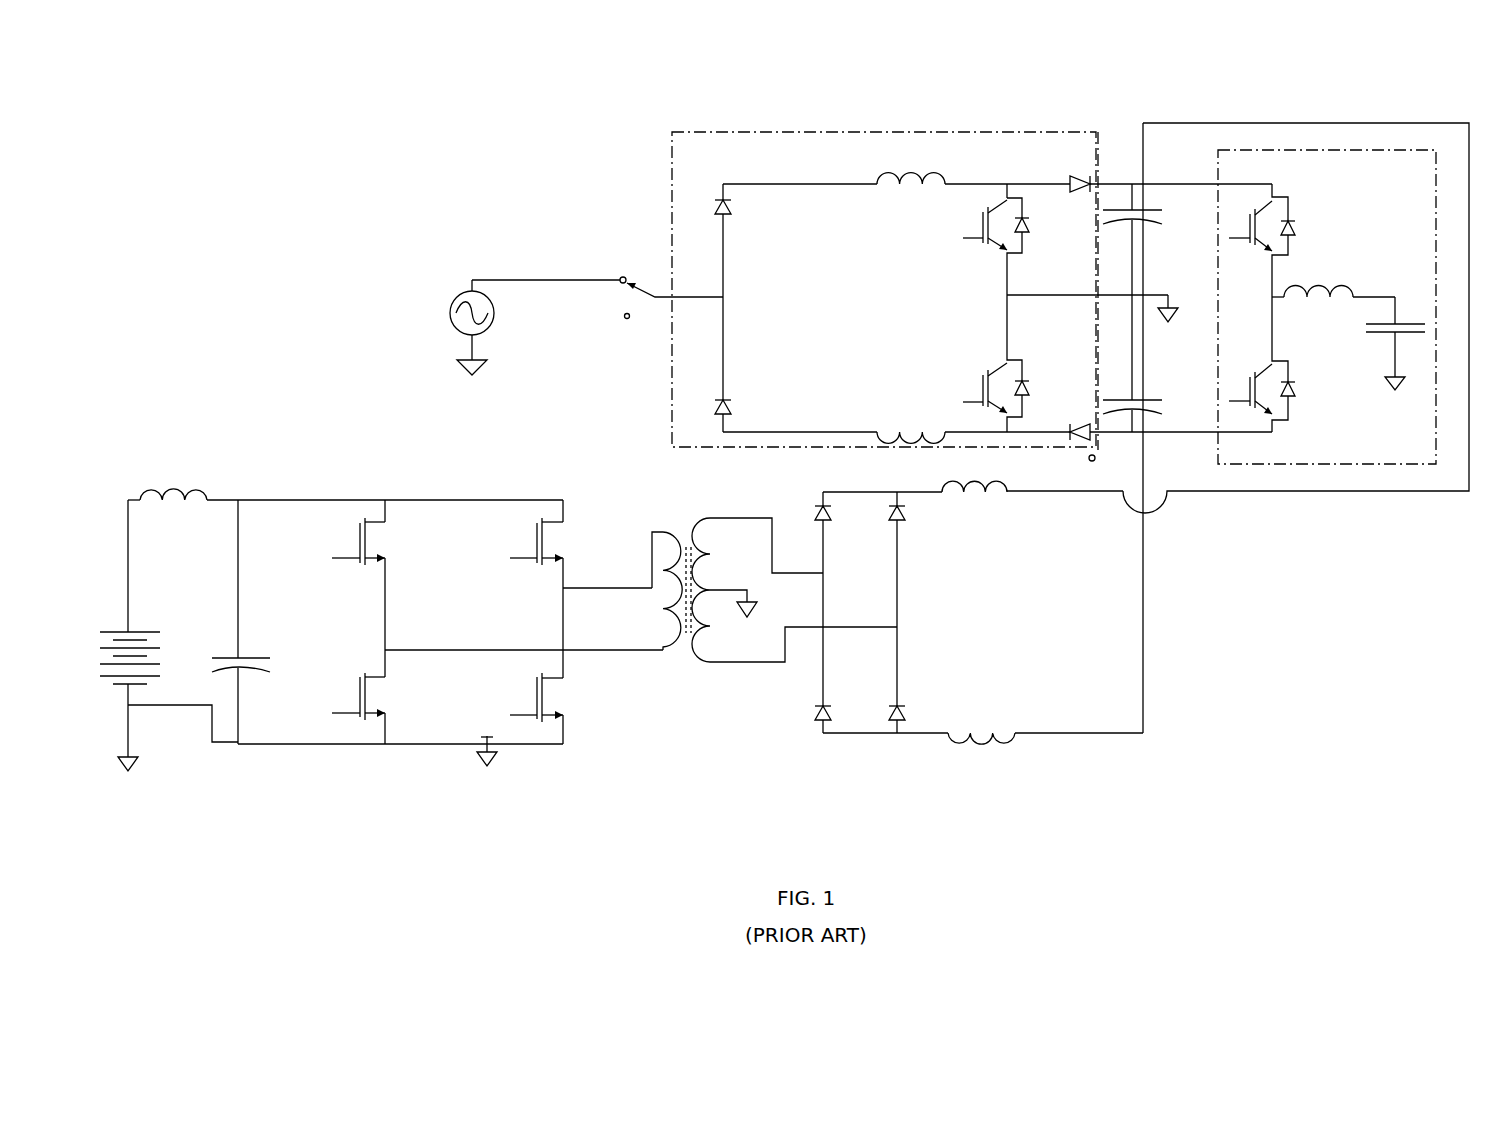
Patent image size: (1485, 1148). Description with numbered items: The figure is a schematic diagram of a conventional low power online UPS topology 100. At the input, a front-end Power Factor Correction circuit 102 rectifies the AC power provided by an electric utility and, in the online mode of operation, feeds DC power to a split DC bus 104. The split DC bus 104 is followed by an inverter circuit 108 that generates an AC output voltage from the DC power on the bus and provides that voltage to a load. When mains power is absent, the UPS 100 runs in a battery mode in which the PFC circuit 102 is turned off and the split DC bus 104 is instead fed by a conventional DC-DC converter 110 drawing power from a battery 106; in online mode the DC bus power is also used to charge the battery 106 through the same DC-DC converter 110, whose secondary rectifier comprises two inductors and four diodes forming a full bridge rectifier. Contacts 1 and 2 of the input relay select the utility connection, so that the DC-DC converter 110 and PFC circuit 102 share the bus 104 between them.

The online UPS topology 100 is at (287, 120).
The front-end Power Factor Correction (PFC) circuit 102 is at (695, 148).
The split DC bus 104 is at (1110, 147).
The inverter circuit 108 is at (1389, 166).
The battery 106 is at (132, 630).
The DC-DC converter 110 is at (1038, 788).
The relay contact 1 is at (617, 264).
The relay contact 2 is at (618, 318).